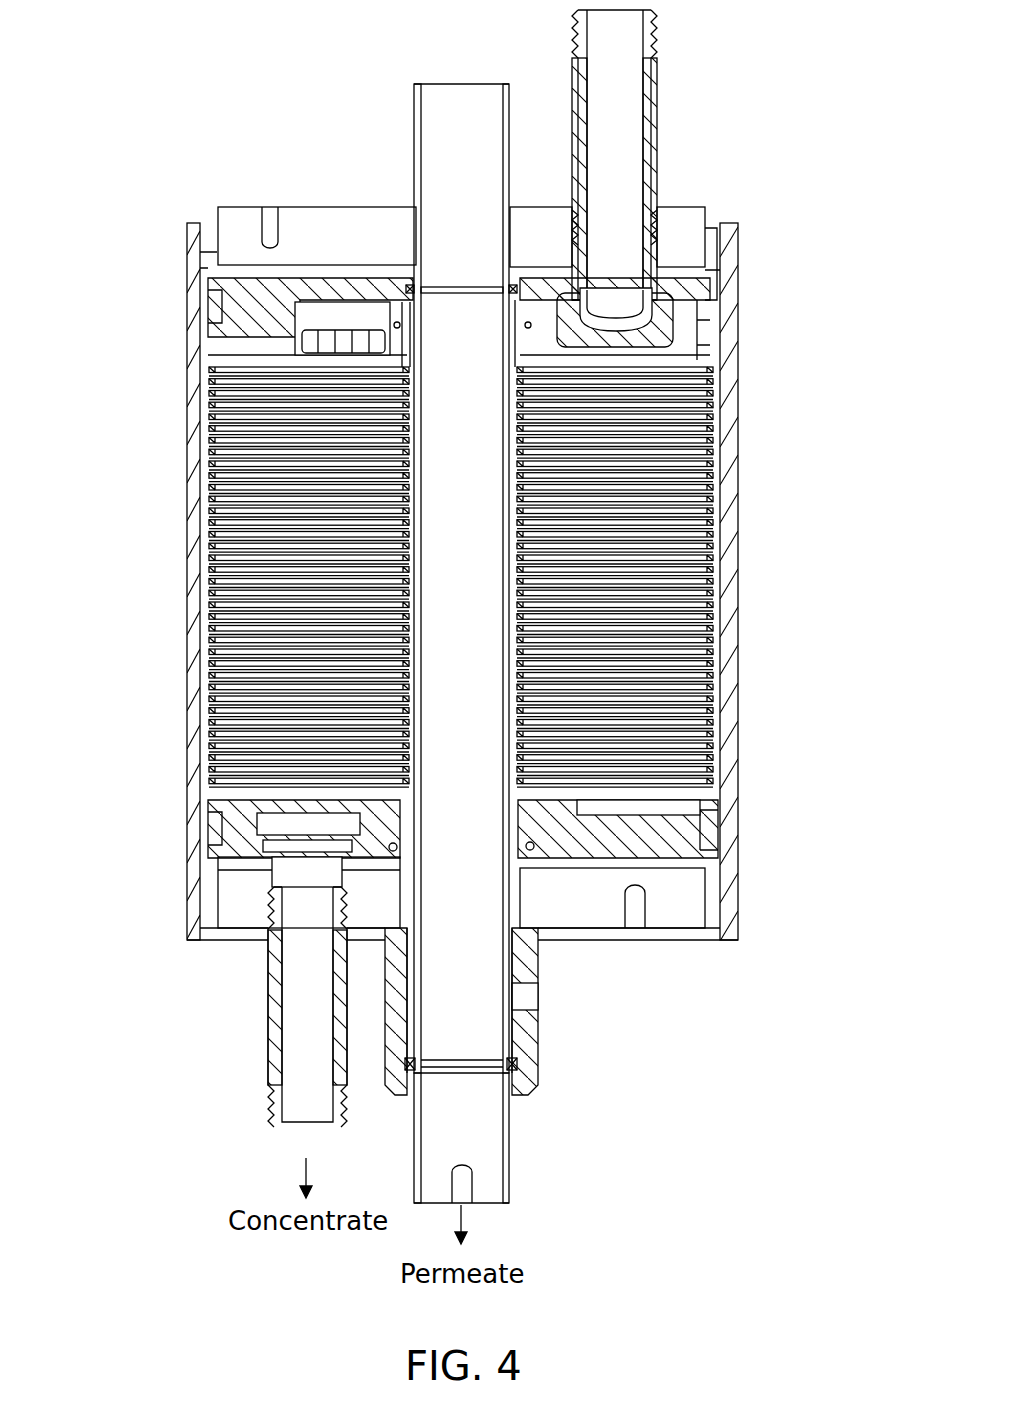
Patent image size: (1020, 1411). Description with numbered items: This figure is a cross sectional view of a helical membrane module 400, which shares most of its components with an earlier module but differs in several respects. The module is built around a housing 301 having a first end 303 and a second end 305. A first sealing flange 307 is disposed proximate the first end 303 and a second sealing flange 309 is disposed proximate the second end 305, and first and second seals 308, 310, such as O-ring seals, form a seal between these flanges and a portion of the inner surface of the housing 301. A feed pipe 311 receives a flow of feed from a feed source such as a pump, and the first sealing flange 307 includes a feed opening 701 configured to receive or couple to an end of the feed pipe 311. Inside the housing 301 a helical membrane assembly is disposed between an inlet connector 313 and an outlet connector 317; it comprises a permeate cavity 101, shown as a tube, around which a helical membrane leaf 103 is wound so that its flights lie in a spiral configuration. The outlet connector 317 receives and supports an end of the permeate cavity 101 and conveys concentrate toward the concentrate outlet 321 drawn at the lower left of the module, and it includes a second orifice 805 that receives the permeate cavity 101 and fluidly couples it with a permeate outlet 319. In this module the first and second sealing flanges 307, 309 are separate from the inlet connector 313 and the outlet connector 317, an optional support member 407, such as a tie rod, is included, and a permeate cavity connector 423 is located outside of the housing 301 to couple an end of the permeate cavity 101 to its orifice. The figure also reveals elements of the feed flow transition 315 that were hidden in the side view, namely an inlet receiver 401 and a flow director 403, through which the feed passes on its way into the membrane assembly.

The helical membrane module 400 is at (158, 32).
The support member 407 is at (452, 152).
The feed pipe 311 is at (619, 138).
The first end 303 is at (290, 206).
The first sealing flange 307 is at (690, 236).
The first seal 308 is at (213, 311).
The inlet connector 313 is at (688, 313).
The feed flow transition 315 is at (615, 320).
The flow director 403 is at (312, 320).
The inlet receiver 401 is at (645, 325).
The housing 301 is at (195, 504).
The permeate cavity 101 is at (455, 625).
The helical membrane leaf 103 is at (700, 590).
The second orifice 805 is at (298, 826).
The feed opening 701 is at (650, 810).
The second seal 310 is at (213, 830).
The outlet connector 317 is at (690, 828).
The second sealing flange 309 is at (690, 895).
The second end 305 is at (666, 940).
The concentrate outlet port 321 is at (295, 1003).
The permeate cavity connector 423 is at (530, 1035).
The permeate outlet 319 is at (496, 1146).